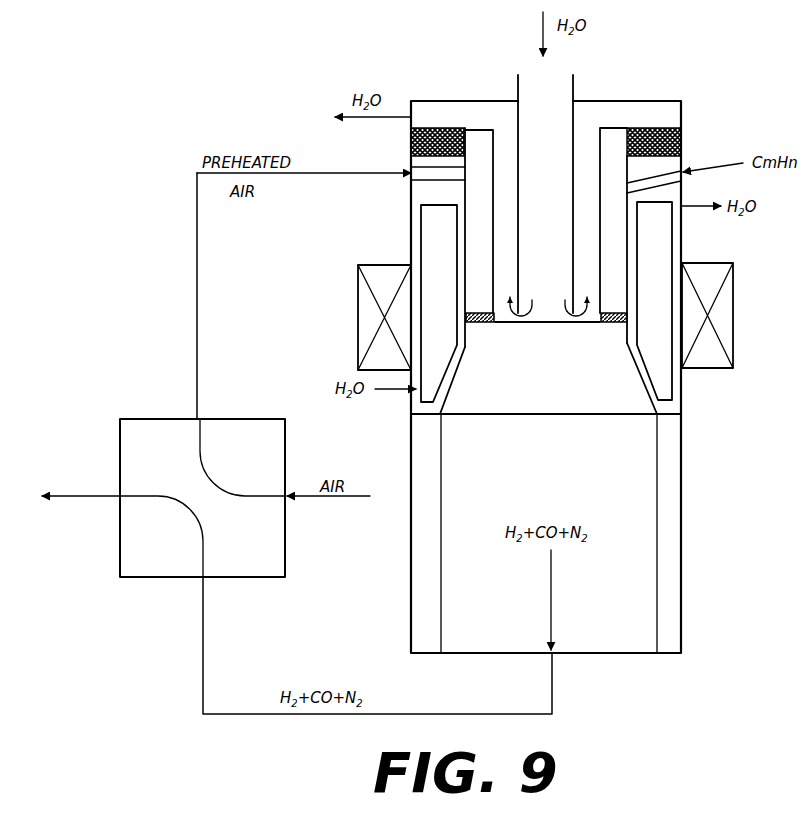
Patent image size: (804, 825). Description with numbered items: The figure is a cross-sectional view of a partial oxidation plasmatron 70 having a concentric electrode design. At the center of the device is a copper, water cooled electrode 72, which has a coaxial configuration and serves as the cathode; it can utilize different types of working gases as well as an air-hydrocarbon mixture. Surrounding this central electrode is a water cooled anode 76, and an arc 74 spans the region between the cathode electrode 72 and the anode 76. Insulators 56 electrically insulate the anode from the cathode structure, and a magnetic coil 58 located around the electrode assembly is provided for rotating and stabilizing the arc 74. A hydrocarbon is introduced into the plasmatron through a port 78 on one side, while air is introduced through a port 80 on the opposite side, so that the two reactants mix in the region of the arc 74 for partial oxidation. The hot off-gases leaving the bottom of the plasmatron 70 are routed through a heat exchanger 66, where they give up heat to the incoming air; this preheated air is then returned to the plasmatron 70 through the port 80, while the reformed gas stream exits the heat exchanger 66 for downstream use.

The insulators 56 is at (411, 148).
The magnetic coil 58 is at (720, 302).
The heat exchanger 66 is at (160, 419).
The partial oxidation plasmatron 70 is at (598, 66).
The water cooled electrode 72 is at (600, 152).
The arc 74 is at (484, 312).
The water cooled anode 76 is at (681, 222).
The port 78 is at (681, 170).
The port 80 is at (411, 180).